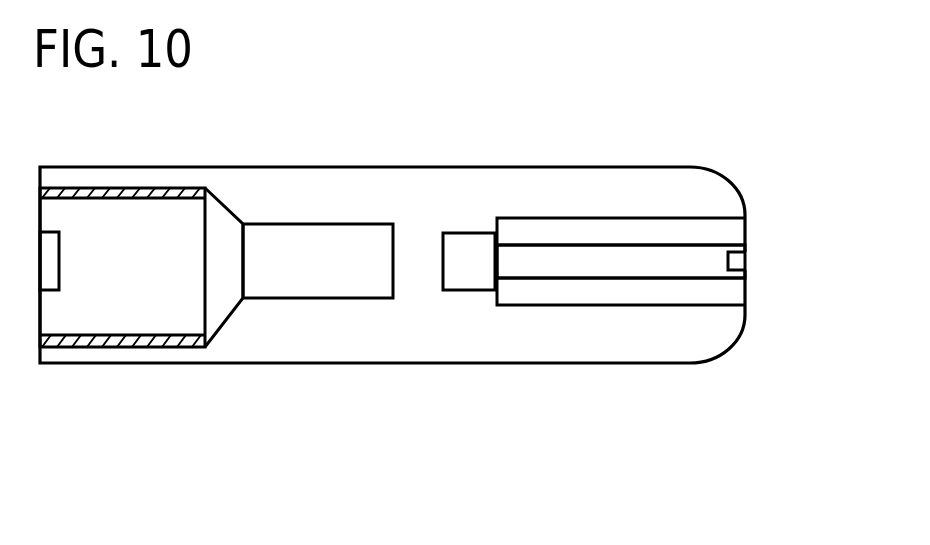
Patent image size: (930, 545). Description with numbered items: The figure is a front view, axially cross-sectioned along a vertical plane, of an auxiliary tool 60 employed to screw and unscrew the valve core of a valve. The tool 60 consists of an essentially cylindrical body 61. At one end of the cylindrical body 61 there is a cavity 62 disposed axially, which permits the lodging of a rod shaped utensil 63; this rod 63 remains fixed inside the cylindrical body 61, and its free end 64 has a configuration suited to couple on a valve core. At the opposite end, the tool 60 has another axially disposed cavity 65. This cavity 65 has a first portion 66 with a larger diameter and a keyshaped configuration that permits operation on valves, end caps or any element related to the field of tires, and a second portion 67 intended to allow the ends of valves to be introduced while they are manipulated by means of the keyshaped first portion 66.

The auxiliary tool 60 is at (441, 298).
The cylindrical body 61 is at (706, 170).
The cavity 62 is at (725, 238).
The rod shaped utensil 63 is at (647, 265).
The free end 64 is at (740, 262).
The cavity 65 is at (140, 192).
The first portion 66 is at (138, 303).
The second portion 67 is at (295, 245).